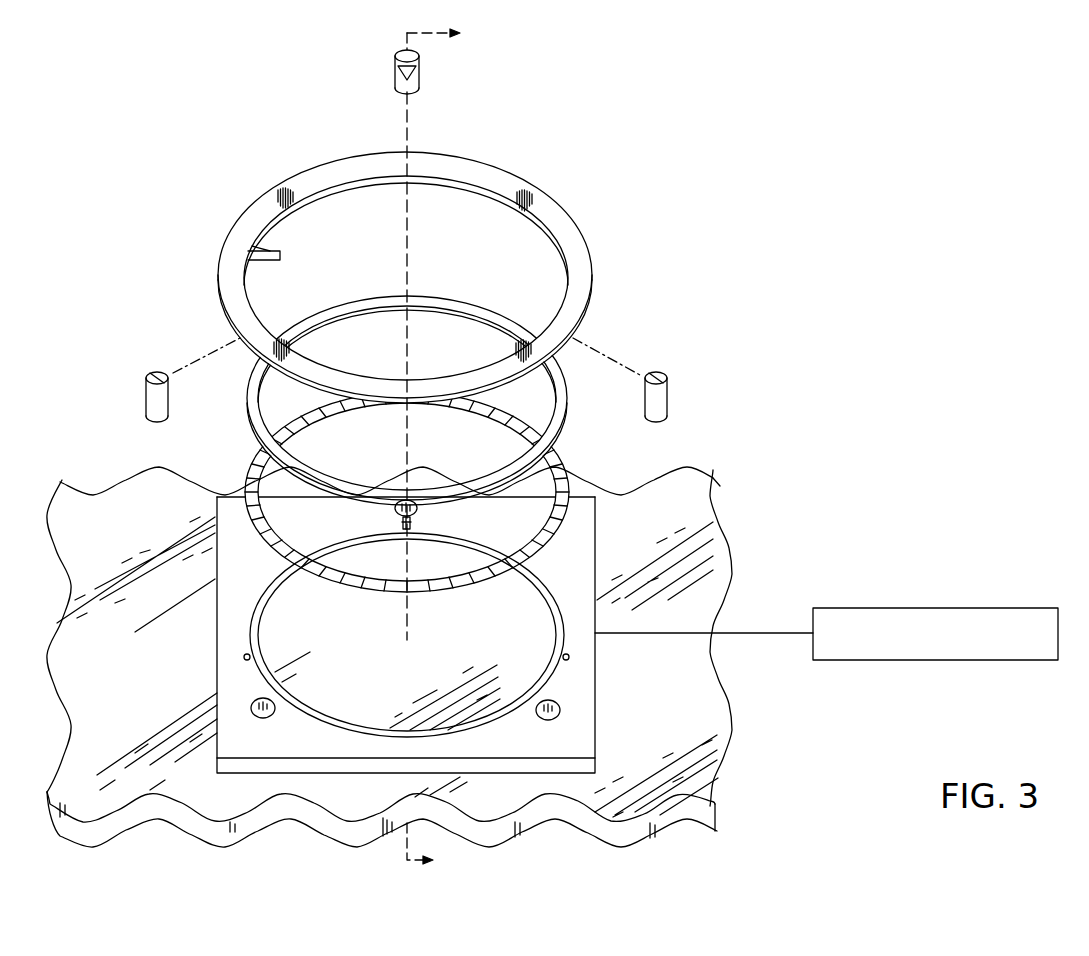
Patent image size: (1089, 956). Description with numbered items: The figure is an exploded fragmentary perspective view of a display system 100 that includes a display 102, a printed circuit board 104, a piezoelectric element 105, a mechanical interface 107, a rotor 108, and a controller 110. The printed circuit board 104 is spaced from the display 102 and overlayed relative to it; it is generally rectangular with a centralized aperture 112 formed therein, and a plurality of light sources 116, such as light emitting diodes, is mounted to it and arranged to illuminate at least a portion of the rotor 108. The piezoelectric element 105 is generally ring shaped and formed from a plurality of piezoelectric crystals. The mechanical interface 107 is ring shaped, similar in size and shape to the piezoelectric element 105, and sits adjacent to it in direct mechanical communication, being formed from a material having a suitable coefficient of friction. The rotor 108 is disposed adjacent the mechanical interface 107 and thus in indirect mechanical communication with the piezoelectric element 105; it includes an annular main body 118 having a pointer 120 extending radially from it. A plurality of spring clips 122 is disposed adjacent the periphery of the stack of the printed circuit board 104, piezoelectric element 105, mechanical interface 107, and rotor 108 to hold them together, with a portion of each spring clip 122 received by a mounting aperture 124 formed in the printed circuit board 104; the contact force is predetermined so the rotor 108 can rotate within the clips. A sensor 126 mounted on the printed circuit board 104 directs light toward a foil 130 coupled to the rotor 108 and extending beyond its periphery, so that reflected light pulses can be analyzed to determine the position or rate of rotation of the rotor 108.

The display system 100 is at (795, 222).
The display 102 is at (725, 696).
The printed circuit board 104 is at (597, 552).
The piezoelectric element 105 is at (421, 492).
The mechanical interface 107 is at (567, 398).
The rotor 108 is at (406, 277).
The controller 110 is at (938, 608).
The centralized aperture 112 is at (260, 644).
The light sources 116 is at (244, 657).
The annular main body 118 is at (573, 238).
The pointer 120 is at (282, 257).
The spring clips 122 is at (420, 53).
The mounting aperture 124 is at (419, 508).
The sensor 126 is at (402, 519).
The foil 130 is at (224, 254).